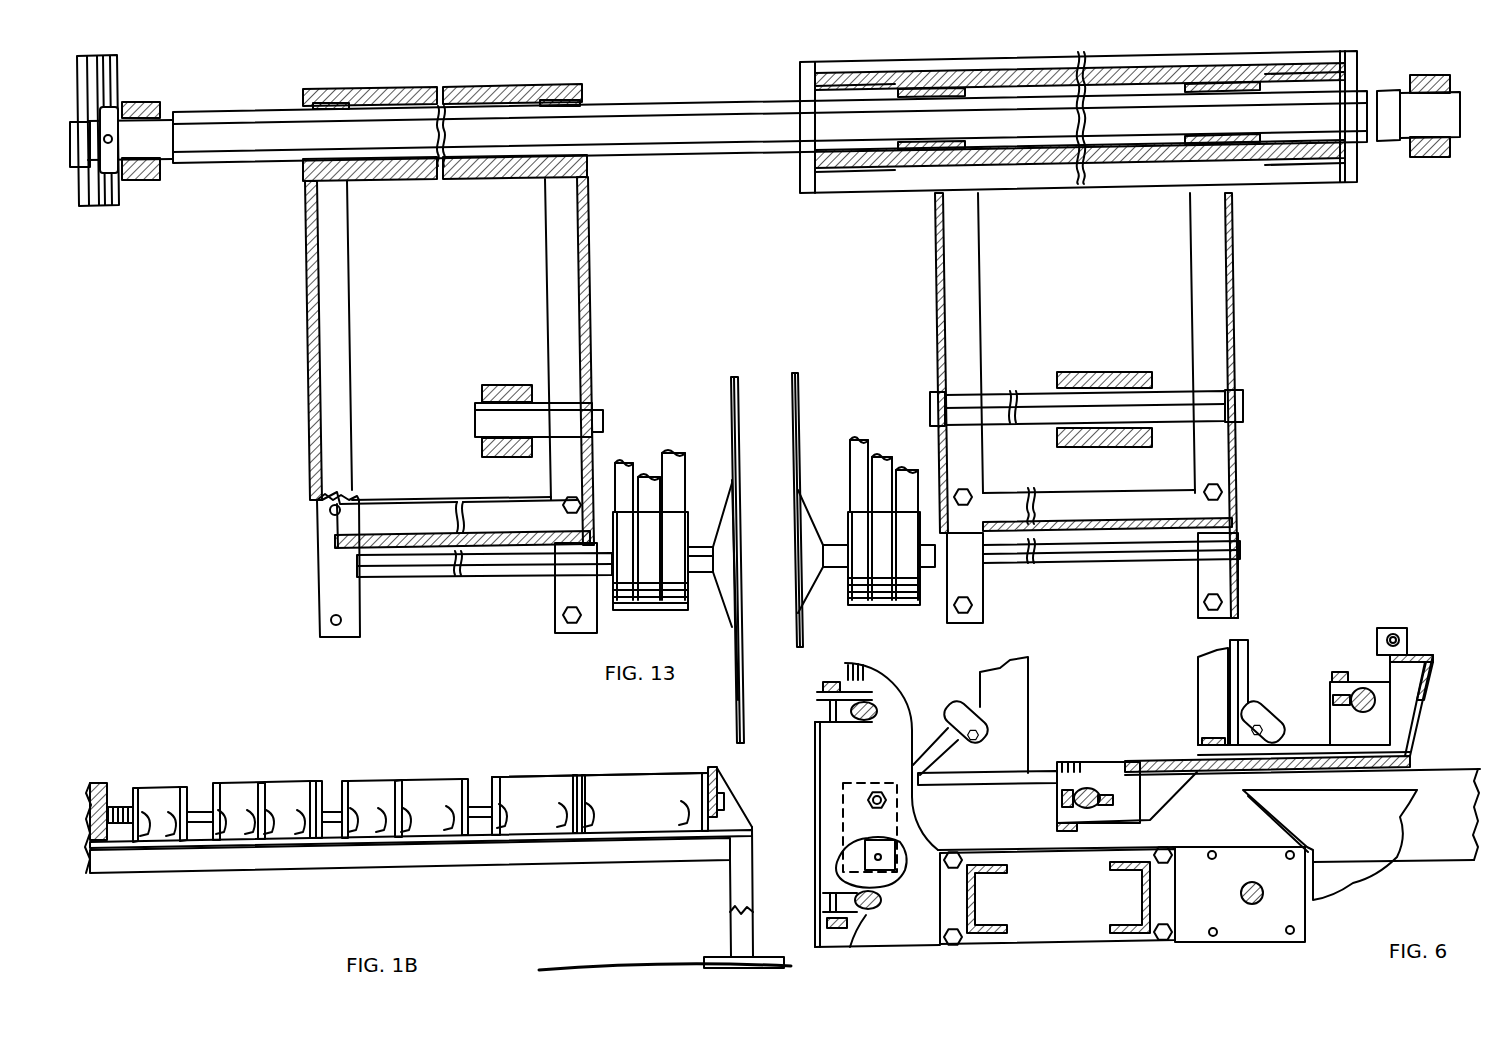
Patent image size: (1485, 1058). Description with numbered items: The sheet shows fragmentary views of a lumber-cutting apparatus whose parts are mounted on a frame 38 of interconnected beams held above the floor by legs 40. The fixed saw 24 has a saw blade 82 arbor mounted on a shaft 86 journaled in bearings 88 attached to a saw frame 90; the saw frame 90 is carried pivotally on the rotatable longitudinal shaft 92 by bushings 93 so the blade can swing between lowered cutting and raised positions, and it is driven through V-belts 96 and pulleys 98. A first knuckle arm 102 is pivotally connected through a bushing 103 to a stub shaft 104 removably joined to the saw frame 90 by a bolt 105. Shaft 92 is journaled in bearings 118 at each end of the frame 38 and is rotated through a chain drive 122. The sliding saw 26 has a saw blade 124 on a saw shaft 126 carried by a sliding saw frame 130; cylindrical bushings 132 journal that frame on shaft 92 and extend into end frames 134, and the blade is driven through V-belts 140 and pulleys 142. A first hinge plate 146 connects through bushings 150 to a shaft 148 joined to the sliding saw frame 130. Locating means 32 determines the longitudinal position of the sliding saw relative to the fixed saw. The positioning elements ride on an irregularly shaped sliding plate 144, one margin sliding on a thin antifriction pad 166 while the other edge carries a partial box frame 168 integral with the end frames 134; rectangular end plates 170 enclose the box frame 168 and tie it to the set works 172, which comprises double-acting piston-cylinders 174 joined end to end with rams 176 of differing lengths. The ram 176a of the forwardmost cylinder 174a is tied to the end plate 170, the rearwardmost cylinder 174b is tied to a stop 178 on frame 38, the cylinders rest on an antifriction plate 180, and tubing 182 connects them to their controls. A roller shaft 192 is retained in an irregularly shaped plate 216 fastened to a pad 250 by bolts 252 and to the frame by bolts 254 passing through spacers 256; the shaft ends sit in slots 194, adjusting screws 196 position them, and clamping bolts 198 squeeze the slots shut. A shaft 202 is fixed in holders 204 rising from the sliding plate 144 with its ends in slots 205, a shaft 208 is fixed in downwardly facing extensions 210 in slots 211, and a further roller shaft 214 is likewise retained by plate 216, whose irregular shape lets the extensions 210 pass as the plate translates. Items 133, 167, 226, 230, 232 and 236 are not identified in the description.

In FIG. 13, the fixed saw 24 is at (705, 422).
In FIG. 13, the sliding saw 26 is at (853, 403).
In FIG. 1B, the locating means 32 is at (364, 764).
In FIG. 1B, the frame 38 is at (353, 857).
In FIG. 6, the frame 38 is at (1038, 833).
In FIG. 1B, the legs 40 is at (740, 898).
In FIG. 13, the saw blade 82 is at (738, 690).
In FIG. 13, the shaft 86 is at (436, 576).
In FIG. 13, the bearings 88 is at (330, 590).
In FIG. 13, the saw frame 90 is at (456, 180).
In FIG. 13, the longitudinal shaft 92 is at (1370, 93).
In FIG. 13, the bushings 93 is at (303, 97).
In FIG. 13, the V-belts 96 is at (675, 612).
In FIG. 13, the pulleys 98 is at (690, 603).
In FIG. 13, the first knuckle arm 102 is at (505, 385).
In FIG. 13, the bushing 103 is at (480, 398).
In FIG. 13, the stub shaft 104 is at (485, 420).
In FIG. 13, the bolt 105 is at (603, 420).
In FIG. 13, the bearings 118 is at (147, 181).
In FIG. 13, the chain drive 122 is at (108, 67).
In FIG. 13, the saw blade 124 is at (796, 377).
In FIG. 13, the saw shaft 126 is at (840, 573).
In FIG. 13, the sliding saw frame 130 is at (1015, 502).
In FIG. 13, the cylindrical bushings 132 is at (980, 173).
In FIG. 13, the bushing 133 is at (927, 173).
In FIG. 13, the end frames 134 is at (880, 180).
In FIG. 13, the V-belts 140 is at (913, 602).
In FIG. 13, the pulleys 142 is at (853, 510).
In FIG. 6, the sliding plate 144 is at (1162, 763).
In FIG. 13, the first hinge plate 146 is at (1128, 378).
In FIG. 13, the shaft 148 is at (1042, 400).
In FIG. 13, the bushings 150 is at (1085, 380).
In FIG. 6, the antifriction pad 166 is at (1047, 773).
In FIG. 6, the plate 167 is at (1363, 853).
In FIG. 13, the partial box frame 168 is at (833, 183).
In FIG. 13, the end plates 170 is at (1355, 173).
In FIG. 1B, the end plates 170 is at (113, 845).
In FIG. 1B, the set works 172 is at (488, 756).
In FIG. 1B, the piston-cylinders 174 is at (362, 790).
In FIG. 1B, the forwardmost cylinder 174a is at (157, 795).
In FIG. 1B, the rearwardmost cylinder 174b is at (647, 787).
In FIG. 1B, the rams 176 is at (199, 811).
In FIG. 1B, the ram 176a is at (124, 812).
In FIG. 1B, the stop 178 is at (723, 770).
In FIG. 1B, the antifriction plate 180 is at (543, 843).
In FIG. 1B, the tubing 182 is at (228, 831).
In FIG. 6, the shaft 192 is at (868, 907).
In FIG. 6, the slots 194 is at (823, 710).
In FIG. 6, the adjusting screws 196 is at (1107, 790).
In FIG. 6, the clamping bolts 198 is at (823, 685).
In FIG. 6, the shaft 202 is at (1360, 692).
In FIG. 6, the holders 204 is at (1422, 697).
In FIG. 6, the slots 205 is at (1333, 700).
In FIG. 6, the shaft 208 is at (1087, 789).
In FIG. 6, the extensions 210 is at (1129, 801).
In FIG. 6, the slots 211 is at (1080, 812).
In FIG. 6, the shaft 214 is at (872, 700).
In FIG. 6, the plate 216 is at (828, 782).
In FIG. 6, the lug 226 is at (1397, 628).
In FIG. 6, the bracket 230 is at (1198, 667).
In FIG. 6, the bracket 232 is at (1027, 692).
In FIG. 6, the flange 236 is at (1430, 657).
In FIG. 6, the pad 250 is at (1063, 932).
In FIG. 6, the bolts 252 is at (955, 864).
In FIG. 6, the bolts 254 is at (868, 802).
In FIG. 6, the spacers 256 is at (838, 865).